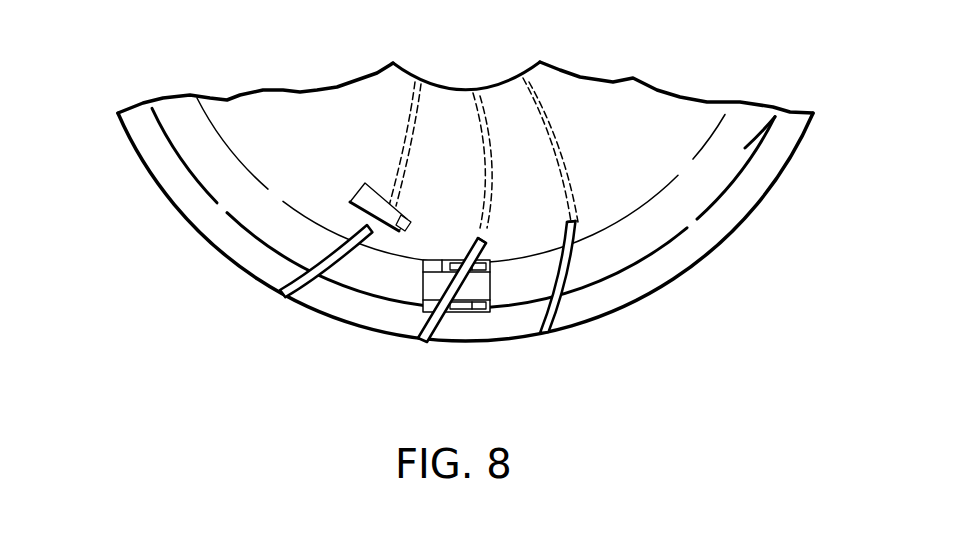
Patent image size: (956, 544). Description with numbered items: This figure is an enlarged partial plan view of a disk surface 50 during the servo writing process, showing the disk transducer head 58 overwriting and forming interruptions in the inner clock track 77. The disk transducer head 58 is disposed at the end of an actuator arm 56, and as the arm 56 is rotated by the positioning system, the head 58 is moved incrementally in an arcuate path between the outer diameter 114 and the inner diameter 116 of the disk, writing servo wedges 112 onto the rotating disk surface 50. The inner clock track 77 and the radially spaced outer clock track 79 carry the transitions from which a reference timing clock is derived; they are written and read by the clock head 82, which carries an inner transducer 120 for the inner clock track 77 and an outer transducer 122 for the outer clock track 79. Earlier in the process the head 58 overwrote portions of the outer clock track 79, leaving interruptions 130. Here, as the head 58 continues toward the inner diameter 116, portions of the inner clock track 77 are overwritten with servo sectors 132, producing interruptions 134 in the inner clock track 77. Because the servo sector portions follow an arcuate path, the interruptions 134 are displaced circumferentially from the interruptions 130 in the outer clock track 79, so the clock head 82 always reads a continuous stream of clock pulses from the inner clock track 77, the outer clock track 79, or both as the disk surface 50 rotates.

The disk surface 50 is at (327, 157).
The actuator arm 56 is at (368, 190).
The disk transducer head 58 is at (410, 221).
The inner clock track 77 is at (712, 130).
The outer clock track 79 is at (763, 137).
The clock head 82 is at (458, 323).
The servo wedges 112 is at (397, 333).
The outer diameter 114 is at (153, 182).
The inner diameter 116 is at (423, 80).
The inner transducer 120 is at (468, 258).
The outer transducer 122 is at (466, 312).
The interruptions 130 is at (688, 228).
The servo sectors 132 is at (488, 250).
The interruptions 134 is at (279, 194).